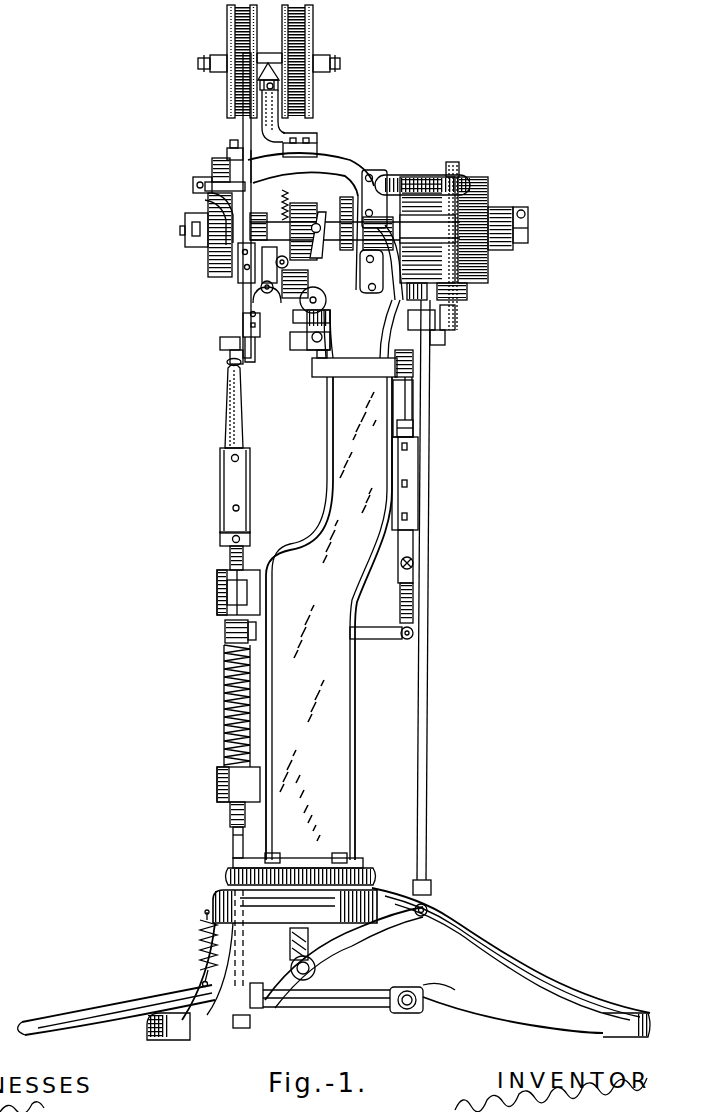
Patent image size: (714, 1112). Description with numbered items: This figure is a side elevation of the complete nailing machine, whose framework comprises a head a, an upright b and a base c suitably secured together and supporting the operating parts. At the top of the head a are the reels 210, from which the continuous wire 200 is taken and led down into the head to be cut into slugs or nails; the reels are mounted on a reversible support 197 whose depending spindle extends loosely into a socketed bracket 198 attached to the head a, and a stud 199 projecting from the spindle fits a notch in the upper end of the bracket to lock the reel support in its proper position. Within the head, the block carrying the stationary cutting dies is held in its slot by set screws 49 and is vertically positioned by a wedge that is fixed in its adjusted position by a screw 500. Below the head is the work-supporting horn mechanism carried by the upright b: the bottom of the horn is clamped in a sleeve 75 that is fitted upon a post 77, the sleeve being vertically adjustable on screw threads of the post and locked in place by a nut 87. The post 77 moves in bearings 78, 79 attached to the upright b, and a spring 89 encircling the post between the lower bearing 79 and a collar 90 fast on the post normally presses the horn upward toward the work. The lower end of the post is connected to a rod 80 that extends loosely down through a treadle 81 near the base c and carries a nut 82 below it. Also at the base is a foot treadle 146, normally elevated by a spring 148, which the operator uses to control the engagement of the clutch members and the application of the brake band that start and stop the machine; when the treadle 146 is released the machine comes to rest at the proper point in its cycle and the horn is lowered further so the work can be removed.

The reel 210 is at (229, 14).
The reversible support 197 is at (268, 60).
The stud 199 is at (283, 86).
The socketed bracket 198 is at (309, 128).
The wire 200 is at (248, 127).
The head a is at (311, 204).
The screw 500 is at (250, 313).
The set screw 49 is at (250, 347).
The sleeve 75 is at (224, 485).
The nut 87 is at (221, 539).
The post 77 is at (243, 558).
The bearing 78 is at (217, 573).
The collar 90 is at (225, 630).
The spring 89 is at (224, 696).
The bearing 79 is at (217, 783).
The rod 80 is at (232, 847).
The upright b is at (328, 475).
The base c is at (377, 889).
The spring 148 is at (198, 942).
The nut 82 is at (244, 1020).
The treadle 81 is at (314, 1005).
The foot treadle 146 is at (392, 950).